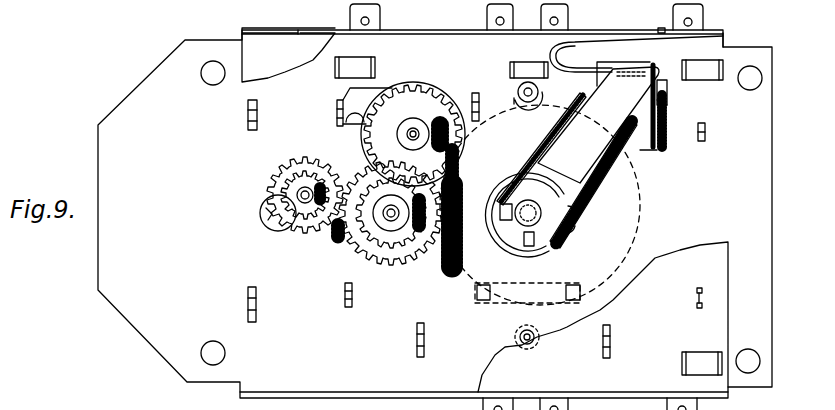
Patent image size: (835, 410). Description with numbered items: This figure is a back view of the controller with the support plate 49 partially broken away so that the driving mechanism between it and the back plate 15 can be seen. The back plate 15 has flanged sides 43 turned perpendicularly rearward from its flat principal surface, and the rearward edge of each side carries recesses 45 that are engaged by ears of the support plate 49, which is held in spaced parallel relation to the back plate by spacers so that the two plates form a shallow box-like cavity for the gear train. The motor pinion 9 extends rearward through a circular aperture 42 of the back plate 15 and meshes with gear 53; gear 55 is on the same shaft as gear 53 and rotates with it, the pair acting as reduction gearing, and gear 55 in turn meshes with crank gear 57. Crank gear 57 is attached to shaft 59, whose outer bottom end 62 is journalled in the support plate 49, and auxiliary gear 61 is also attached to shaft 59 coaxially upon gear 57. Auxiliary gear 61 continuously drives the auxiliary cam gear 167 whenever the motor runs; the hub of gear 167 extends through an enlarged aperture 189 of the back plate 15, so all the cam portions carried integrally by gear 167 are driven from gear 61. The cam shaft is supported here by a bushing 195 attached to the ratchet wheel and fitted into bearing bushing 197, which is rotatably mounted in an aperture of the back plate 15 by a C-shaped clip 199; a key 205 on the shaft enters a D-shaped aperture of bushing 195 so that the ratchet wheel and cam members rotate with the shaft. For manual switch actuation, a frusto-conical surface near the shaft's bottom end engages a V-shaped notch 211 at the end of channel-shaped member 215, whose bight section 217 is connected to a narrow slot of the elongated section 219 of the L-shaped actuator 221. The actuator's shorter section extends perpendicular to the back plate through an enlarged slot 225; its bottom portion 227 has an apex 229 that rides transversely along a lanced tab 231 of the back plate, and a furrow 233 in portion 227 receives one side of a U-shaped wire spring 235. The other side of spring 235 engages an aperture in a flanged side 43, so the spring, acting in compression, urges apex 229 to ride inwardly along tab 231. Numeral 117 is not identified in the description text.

The back plate 15 is at (147, 97).
The support plate 49 is at (257, 63).
The recesses 45 is at (312, 32).
The member 117 is at (763, 0).
The flanged sides 43 is at (723, 33).
The enlarged aperture 189 is at (418, 82).
The auxiliary cam gear 167 is at (433, 100).
The gear 53 is at (303, 160).
The gear 55 is at (307, 222).
The circular aperture 42 is at (270, 230).
The motor pinion 9 is at (268, 217).
The crank gear shaft 59 is at (387, 218).
The crank gear 57 is at (422, 247).
The outer bottom end of shaft 62 is at (388, 225).
The auxiliary gear 61 is at (395, 245).
The channel-shaped member 215 is at (542, 143).
The elongated section of actuator 219 is at (572, 162).
The bottom portion of actuator section 227 is at (627, 67).
The furrow 233 is at (633, 70).
The L-shaped actuator 221 is at (630, 122).
The apex 229 is at (665, 80).
The lanced tab 231 is at (667, 98).
The enlarged slot 225 is at (645, 152).
The U-shaped wire spring 235 is at (563, 52).
The bight section 217 is at (547, 200).
The bearing bushing 197 is at (507, 245).
The key 205 is at (512, 222).
The bushing 195 is at (528, 240).
The C-shaped clip 199 is at (572, 218).
The V-shaped notch 211 is at (570, 235).